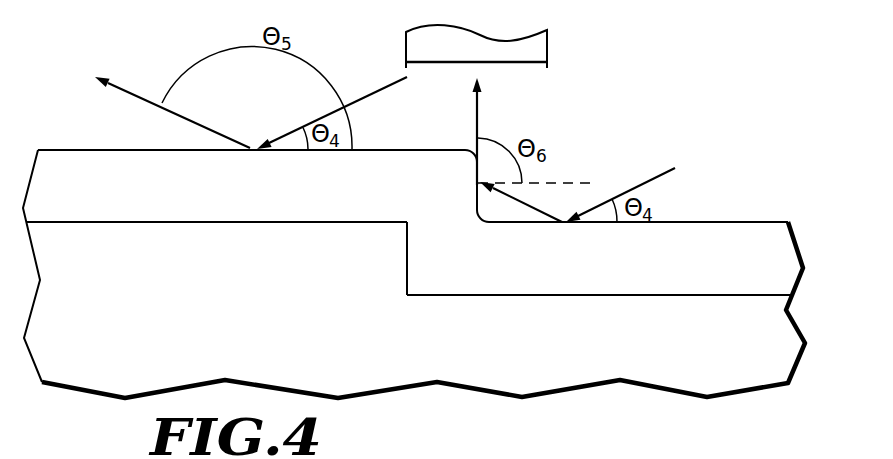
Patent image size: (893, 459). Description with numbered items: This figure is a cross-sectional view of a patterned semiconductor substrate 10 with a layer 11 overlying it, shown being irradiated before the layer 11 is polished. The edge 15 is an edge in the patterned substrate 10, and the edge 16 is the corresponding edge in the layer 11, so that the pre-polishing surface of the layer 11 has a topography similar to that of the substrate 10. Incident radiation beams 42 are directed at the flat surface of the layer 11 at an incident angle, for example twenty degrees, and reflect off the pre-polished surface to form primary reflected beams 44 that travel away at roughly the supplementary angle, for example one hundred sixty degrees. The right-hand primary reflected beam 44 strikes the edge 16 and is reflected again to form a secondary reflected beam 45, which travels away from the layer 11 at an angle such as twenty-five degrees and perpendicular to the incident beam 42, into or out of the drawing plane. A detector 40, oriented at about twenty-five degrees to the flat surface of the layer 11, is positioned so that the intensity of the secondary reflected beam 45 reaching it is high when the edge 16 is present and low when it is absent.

The patterned semiconductor substrate 10 is at (689, 368).
The layer 11 is at (689, 274).
The edge 15 is at (394, 260).
The edge 16 is at (464, 172).
The detector 40 is at (538, 43).
The incident radiation beams 42 is at (373, 92).
The primary reflected beams 44 is at (140, 100).
The secondary reflected beam 45 is at (479, 116).